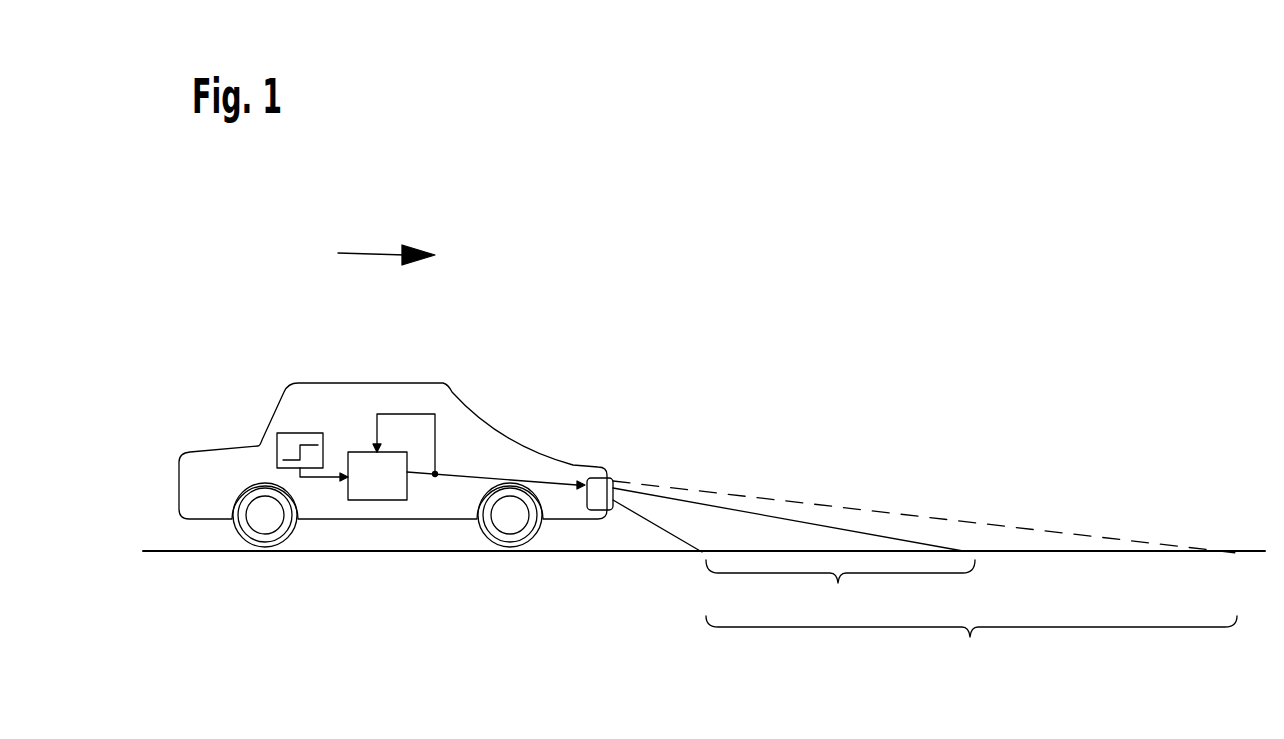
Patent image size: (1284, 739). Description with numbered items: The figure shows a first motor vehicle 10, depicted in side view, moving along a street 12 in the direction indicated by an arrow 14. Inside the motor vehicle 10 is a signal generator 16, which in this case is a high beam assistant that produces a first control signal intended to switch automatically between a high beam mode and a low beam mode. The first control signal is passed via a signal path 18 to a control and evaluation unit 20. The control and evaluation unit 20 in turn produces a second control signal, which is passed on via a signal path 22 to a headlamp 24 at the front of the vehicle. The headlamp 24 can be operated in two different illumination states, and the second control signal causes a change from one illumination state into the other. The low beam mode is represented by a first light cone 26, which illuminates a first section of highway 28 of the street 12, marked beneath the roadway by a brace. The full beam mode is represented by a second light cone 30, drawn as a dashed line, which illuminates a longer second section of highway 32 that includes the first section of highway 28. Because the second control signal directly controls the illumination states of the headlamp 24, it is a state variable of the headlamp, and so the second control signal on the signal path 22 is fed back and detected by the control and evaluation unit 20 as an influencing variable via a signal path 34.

The motor vehicle 10 is at (370, 383).
The street 12 is at (622, 553).
The arrow 14 is at (368, 253).
The signal generator 16 is at (277, 452).
The signal path 18 is at (320, 469).
The control and evaluation unit 20 is at (373, 500).
The signal path 22 is at (450, 477).
The headlamp 24 is at (612, 481).
The first light cone 26 is at (778, 516).
The first section of highway 28 is at (840, 590).
The second light cone 30 is at (920, 515).
The second section of highway 32 is at (971, 643).
The signal path 34 is at (436, 440).